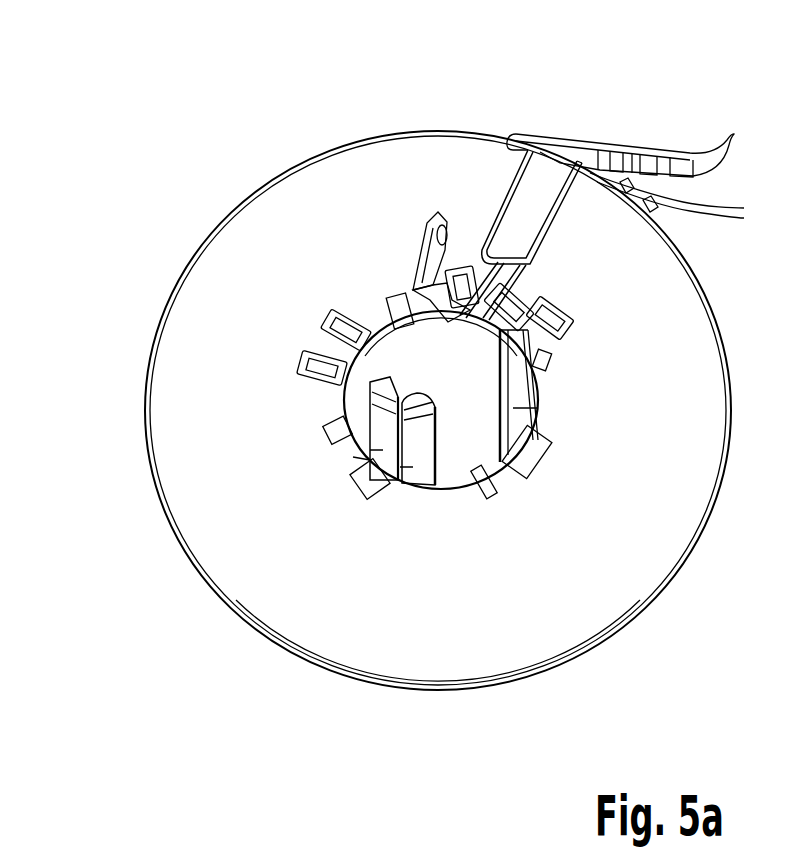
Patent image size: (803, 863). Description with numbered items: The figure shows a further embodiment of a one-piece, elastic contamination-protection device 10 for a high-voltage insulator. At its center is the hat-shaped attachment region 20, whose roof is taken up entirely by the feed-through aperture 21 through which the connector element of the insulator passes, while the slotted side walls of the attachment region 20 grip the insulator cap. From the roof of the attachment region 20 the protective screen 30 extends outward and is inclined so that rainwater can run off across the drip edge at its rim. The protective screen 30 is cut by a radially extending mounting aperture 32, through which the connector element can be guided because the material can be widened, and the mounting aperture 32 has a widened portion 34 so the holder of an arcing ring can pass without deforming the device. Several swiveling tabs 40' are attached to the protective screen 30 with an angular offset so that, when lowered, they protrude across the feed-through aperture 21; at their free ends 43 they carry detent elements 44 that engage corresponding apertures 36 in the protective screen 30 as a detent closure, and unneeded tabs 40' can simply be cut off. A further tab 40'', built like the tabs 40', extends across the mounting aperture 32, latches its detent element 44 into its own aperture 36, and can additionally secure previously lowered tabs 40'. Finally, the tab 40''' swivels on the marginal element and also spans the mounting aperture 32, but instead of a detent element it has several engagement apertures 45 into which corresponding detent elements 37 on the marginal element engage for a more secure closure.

The contamination-protection device 10 is at (206, 206).
The attachment region 20 is at (443, 490).
The feed-through aperture 21 is at (451, 448).
The protective screen 30 is at (180, 429).
The mounting aperture 32 is at (540, 197).
The widened portion 34 is at (561, 164).
The apertures 36 is at (320, 355).
The detent elements 37 is at (682, 201).
The tabs 40' is at (455, 469).
The tab 40'' is at (383, 200).
The tab 40''' is at (626, 112).
The free ends 43 is at (511, 381).
The detent elements 44 is at (428, 222).
The engagement apertures 45 is at (668, 142).